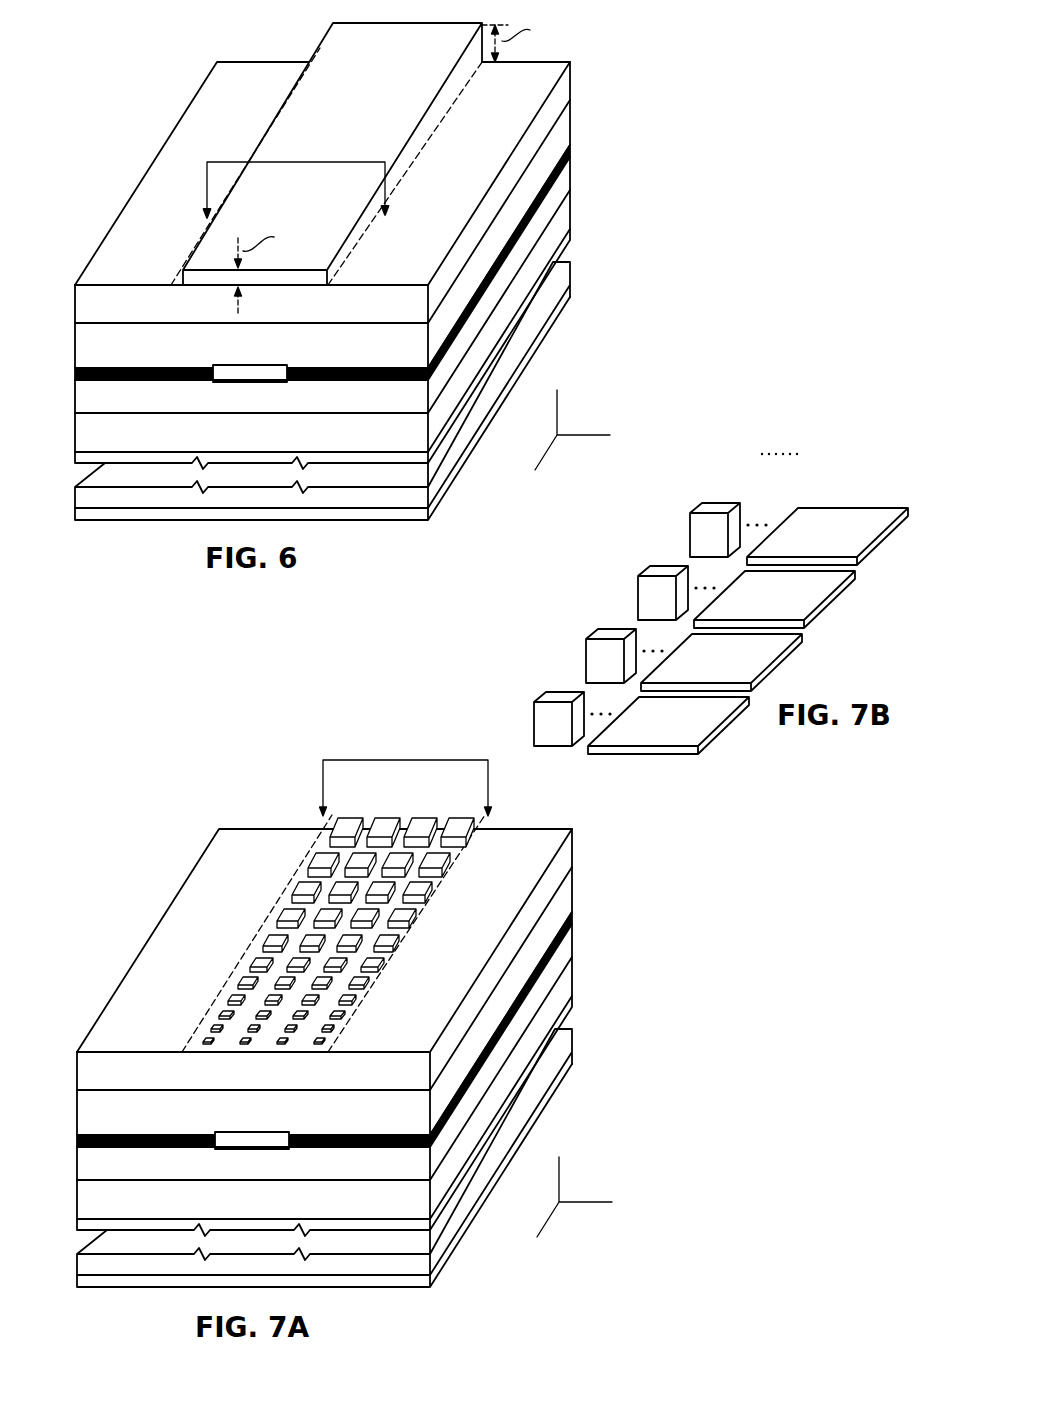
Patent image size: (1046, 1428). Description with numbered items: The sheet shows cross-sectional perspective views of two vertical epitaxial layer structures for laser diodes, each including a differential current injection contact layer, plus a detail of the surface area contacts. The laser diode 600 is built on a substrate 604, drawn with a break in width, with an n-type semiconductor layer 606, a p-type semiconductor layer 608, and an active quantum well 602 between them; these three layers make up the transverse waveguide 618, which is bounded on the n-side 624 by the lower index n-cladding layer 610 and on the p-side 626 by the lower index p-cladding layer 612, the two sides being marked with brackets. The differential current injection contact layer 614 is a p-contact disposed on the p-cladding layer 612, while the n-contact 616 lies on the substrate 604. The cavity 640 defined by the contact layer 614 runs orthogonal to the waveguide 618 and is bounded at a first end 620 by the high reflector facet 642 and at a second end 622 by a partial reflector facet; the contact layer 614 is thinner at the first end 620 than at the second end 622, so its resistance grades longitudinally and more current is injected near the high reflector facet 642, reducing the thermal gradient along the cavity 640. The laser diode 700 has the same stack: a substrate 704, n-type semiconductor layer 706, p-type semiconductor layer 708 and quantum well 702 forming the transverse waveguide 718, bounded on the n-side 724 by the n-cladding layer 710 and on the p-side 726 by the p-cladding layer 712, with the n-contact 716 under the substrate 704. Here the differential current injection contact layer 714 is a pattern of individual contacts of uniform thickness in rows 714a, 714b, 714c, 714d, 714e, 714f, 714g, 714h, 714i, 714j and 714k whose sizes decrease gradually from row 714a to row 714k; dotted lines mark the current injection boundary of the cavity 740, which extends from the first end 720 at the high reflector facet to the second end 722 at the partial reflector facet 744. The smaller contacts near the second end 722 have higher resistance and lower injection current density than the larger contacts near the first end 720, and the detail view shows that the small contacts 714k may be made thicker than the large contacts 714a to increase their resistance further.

In FIG. 6, the laser diode 600 is at (324, 298).
In FIG. 6, the quantum well 602 is at (322, 263).
In FIG. 6, the substrate 604 is at (68, 452).
In FIG. 6, the n-type semiconductor layer 606 is at (68, 323).
In FIG. 6, the p-type semiconductor layer 608 is at (122, 357).
In FIG. 6, the n-cladding layer 610 is at (417, 442).
In FIG. 6, the p-cladding layer 612 is at (417, 313).
In FIG. 6, the differential current injection contact layer 614 is at (412, 68).
In FIG. 6, the n-contact 616 is at (74, 522).
In FIG. 6, the transverse waveguide 618 is at (291, 256).
In FIG. 6, the first end 620 is at (79, 283).
In FIG. 6, the second end 622 is at (207, 76).
In FIG. 6, the n-side 624 is at (578, 155).
In FIG. 6, the p-side 626 is at (578, 62).
In FIG. 6, the cavity 640 is at (303, 162).
In FIG. 6, the high reflector facet 642 is at (252, 365).
In FIG. 7A, the laser diode 700 is at (326, 1025).
In FIG. 7A, the quantum well 702 is at (324, 1030).
In FIG. 7A, the substrate 704 is at (293, 1136).
In FIG. 7A, the n-type semiconductor layer 706 is at (324, 1052).
In FIG. 7A, the p-type semiconductor layer 708 is at (324, 1001).
In FIG. 7A, the n-cladding layer 710 is at (324, 1088).
In FIG. 7A, the p-cladding layer 712 is at (324, 959).
In FIG. 7A, the differential current injection contact layer 714 is at (339, 913).
In FIG. 7A, the contact row 714a is at (474, 839).
In FIG. 7B, the contact row 714a is at (835, 507).
In FIG. 7A, the contact row 714b is at (308, 860).
In FIG. 7A, the contact row 714c is at (434, 895).
In FIG. 7A, the contact row 714d is at (274, 915).
In FIG. 7A, the contact row 714e is at (402, 942).
In FIG. 7A, the contact row 714f is at (246, 960).
In FIG. 7A, the contact row 714g is at (375, 985).
In FIG. 7A, the contact row 714h is at (222, 995).
In FIG. 7A, the contact row 714i is at (355, 1013).
In FIG. 7A, the contact row 714j is at (202, 1025).
In FIG. 7A, the contact row 714k is at (337, 1040).
In FIG. 7B, the contact row 714k is at (721, 503).
In FIG. 7A, the n-contact 716 is at (312, 1206).
In FIG. 7A, the transverse waveguide 718 is at (293, 1023).
In FIG. 7A, the first end 720 is at (324, 915).
In FIG. 7A, the second end 722 is at (244, 1015).
In FIG. 7A, the n-side 724 is at (608, 993).
In FIG. 7A, the p-side 726 is at (608, 873).
In FIG. 7A, the cavity 740 is at (405, 760).
In FIG. 7A, the partial reflector facet 744 is at (229, 1127).